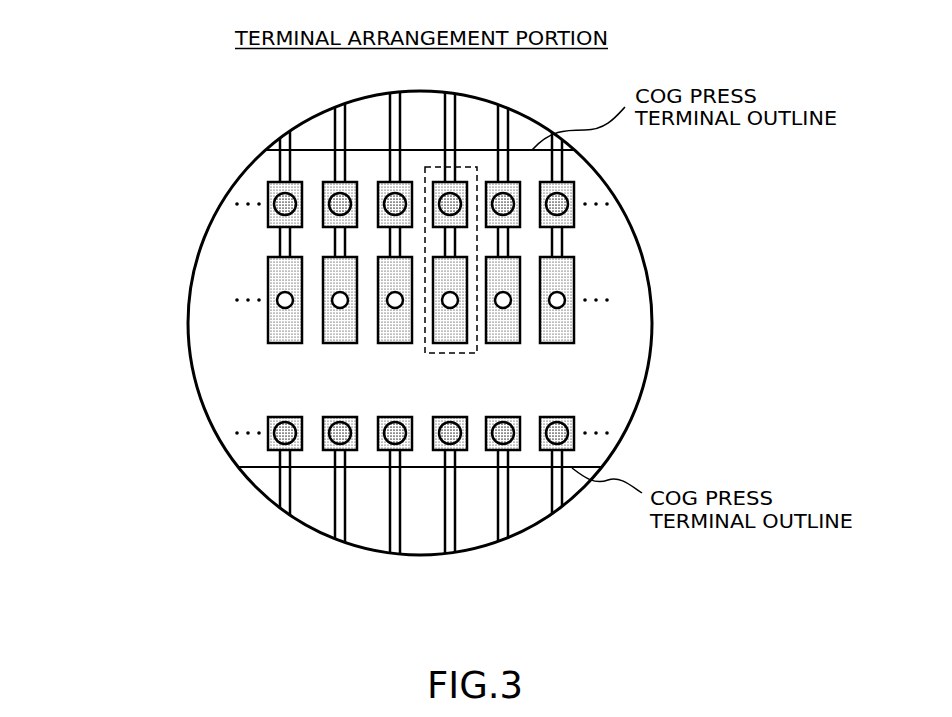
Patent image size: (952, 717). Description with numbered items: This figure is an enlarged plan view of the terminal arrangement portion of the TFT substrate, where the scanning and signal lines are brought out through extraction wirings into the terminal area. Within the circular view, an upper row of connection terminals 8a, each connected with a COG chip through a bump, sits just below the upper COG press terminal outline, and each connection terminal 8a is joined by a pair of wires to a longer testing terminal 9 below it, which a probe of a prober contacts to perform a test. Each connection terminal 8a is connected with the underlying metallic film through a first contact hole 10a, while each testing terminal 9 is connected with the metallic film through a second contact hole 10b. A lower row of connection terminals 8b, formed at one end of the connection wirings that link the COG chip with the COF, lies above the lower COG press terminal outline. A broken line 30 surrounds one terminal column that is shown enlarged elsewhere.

The connection terminal 8a is at (563, 190).
The connection terminal 8b is at (567, 423).
The testing terminal 9 is at (575, 330).
The first contact hole 10a is at (274, 195).
The second contact hole 10b is at (280, 297).
The broken line 30 is at (453, 353).